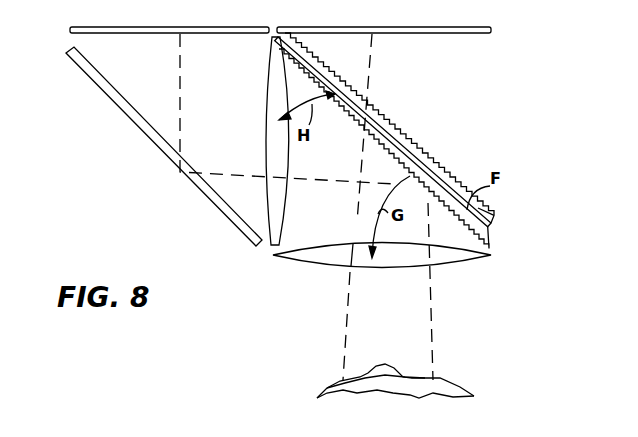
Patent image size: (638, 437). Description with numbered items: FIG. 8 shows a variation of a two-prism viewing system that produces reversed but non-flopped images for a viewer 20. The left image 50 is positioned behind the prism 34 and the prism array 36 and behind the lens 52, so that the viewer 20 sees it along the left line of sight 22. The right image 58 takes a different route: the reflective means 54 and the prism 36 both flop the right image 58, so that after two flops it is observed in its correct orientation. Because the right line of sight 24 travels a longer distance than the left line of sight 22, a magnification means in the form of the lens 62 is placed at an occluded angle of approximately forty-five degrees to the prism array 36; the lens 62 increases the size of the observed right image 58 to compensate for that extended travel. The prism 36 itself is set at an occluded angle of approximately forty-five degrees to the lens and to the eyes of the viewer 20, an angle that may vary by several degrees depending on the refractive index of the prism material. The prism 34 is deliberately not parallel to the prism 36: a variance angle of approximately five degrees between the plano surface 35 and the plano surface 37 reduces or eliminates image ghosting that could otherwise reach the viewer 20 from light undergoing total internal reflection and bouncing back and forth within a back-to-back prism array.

The viewer 20 is at (443, 390).
The left line of sight 22 is at (346, 335).
The right line of sight 24 is at (433, 333).
The prism 34 is at (481, 206).
The plano surface 35 is at (432, 158).
The prism array 36 is at (470, 236).
The plano surface 37 is at (440, 197).
The left image 50 is at (460, 34).
The lens 52 is at (457, 258).
The reflective means 54 is at (151, 137).
The right image 58 is at (202, 35).
The lens 62 is at (272, 212).